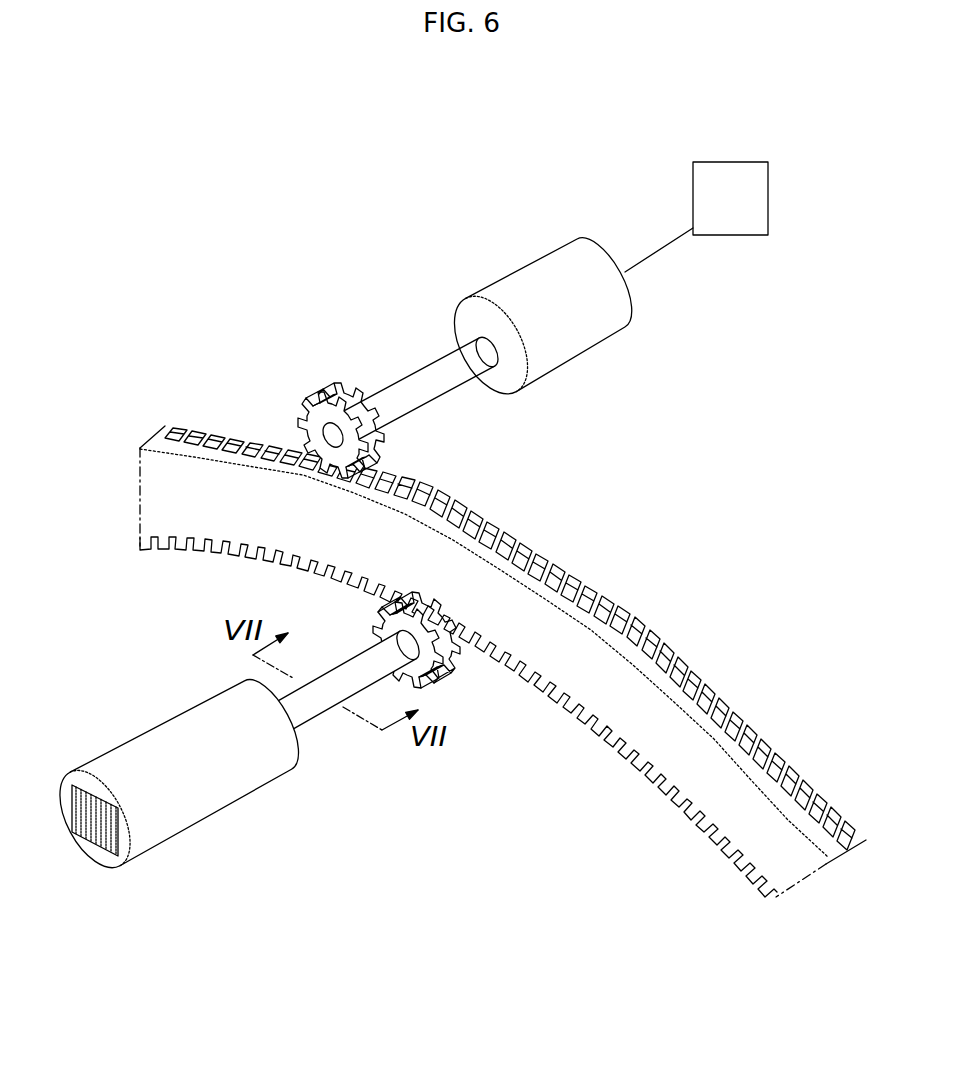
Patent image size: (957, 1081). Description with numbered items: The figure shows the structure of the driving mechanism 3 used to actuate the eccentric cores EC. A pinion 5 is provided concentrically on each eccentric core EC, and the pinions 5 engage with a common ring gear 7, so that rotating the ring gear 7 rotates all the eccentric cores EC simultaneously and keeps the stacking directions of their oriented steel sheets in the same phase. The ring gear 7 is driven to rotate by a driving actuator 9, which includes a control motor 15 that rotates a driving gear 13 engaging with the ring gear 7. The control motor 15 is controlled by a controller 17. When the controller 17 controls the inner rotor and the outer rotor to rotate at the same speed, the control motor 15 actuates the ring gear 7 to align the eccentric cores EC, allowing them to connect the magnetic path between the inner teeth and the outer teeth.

The driving mechanism 3 is at (471, 316).
The pinion 5 is at (427, 662).
The ring gear 7 is at (618, 594).
The driving actuator 9 is at (537, 280).
The driving gear 13 is at (340, 384).
The control motor 15 is at (529, 274).
The controller 17 is at (733, 220).
The eccentric core EC is at (207, 800).